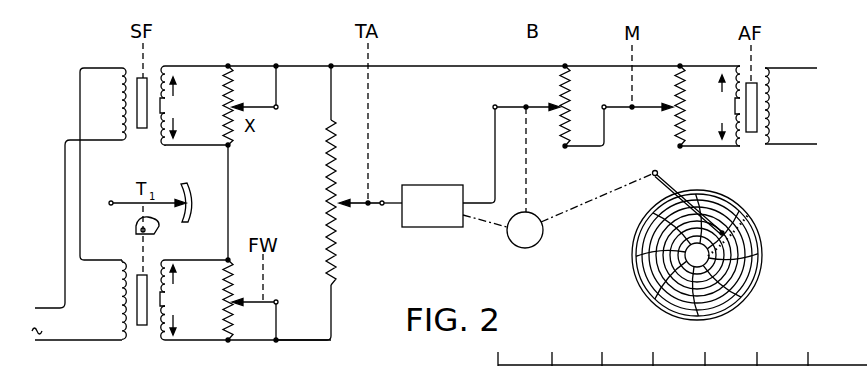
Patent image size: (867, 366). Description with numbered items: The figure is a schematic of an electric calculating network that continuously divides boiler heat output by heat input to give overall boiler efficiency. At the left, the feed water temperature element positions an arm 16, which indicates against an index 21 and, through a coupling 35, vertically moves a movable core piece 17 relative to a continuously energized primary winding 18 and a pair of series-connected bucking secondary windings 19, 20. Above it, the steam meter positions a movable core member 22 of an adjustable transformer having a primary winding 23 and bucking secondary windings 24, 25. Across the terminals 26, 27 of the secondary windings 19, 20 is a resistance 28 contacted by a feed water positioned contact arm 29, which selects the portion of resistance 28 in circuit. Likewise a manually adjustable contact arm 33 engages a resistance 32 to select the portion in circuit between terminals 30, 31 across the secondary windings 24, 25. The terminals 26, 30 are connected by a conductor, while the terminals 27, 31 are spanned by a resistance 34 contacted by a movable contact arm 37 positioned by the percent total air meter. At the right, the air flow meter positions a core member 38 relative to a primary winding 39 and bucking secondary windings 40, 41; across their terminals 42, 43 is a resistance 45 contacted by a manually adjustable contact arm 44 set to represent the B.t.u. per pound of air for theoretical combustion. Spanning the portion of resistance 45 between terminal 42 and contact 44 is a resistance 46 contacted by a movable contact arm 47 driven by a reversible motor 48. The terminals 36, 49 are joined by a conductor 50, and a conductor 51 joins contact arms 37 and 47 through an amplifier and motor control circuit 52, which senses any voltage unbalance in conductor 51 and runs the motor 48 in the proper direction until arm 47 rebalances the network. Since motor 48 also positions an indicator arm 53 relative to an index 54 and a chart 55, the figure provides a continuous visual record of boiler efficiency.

The arm 16 is at (113, 206).
The movable core piece 17 is at (143, 325).
The primary winding 18 is at (118, 294).
The bucking secondary winding 19 is at (165, 291).
The bucking secondary winding 20 is at (167, 312).
The index 21 is at (190, 186).
The movable core member 22 is at (143, 128).
The primary winding 23 is at (118, 98).
The bucking secondary winding 24 is at (165, 97).
The bucking secondary winding 25 is at (165, 118).
The terminal 26 is at (228, 256).
The terminal 27 is at (228, 341).
The resistance 28 is at (222, 292).
The feed water positioned contact arm 29 is at (272, 305).
The terminal 30 is at (230, 146).
The terminal 31 is at (231, 68).
The resistance 32 is at (222, 108).
The manually adjustable contact arm 33 is at (278, 109).
The resistance 34 is at (322, 185).
The cam coupling 35 is at (137, 233).
The terminal 36 is at (329, 68).
The movable contact arm 37 is at (362, 206).
The core member 38 is at (751, 132).
The primary winding 39 is at (778, 113).
The bucking secondary winding 40 is at (730, 100).
The bucking secondary winding 41 is at (732, 116).
The terminal 42 is at (676, 68).
The terminal 43 is at (680, 147).
The manually adjustable contact arm 44 is at (648, 109).
The resistance 45 is at (684, 100).
The resistance 46 is at (572, 107).
The movable contact arm 47 is at (512, 106).
The reversible motor 48 is at (531, 247).
The terminal 49 is at (563, 67).
The conductor 50 is at (440, 67).
The conductor 51 is at (391, 200).
The amplifier and motor control circuit 52 is at (430, 185).
The indicator arm 53 is at (653, 180).
The index 54 is at (750, 216).
The chart 55 is at (760, 280).